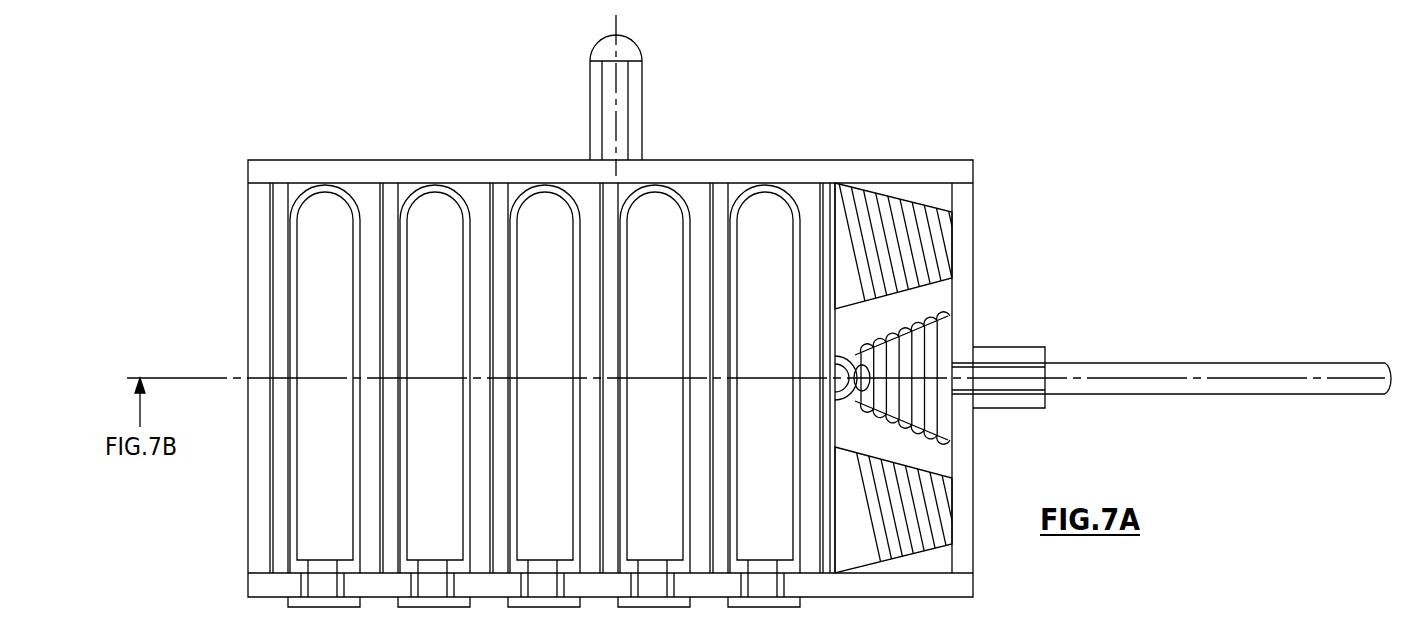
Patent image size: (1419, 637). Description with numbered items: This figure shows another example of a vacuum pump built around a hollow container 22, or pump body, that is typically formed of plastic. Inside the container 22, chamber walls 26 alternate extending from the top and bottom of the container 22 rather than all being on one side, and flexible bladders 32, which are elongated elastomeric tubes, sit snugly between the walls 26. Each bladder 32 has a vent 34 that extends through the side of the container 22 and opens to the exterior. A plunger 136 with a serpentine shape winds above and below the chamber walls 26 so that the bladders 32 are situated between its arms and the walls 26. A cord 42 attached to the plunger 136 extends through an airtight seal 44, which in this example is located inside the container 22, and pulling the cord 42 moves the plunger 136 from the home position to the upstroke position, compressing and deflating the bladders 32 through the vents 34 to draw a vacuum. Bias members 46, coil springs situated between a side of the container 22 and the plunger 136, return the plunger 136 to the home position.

The hollow container 22 is at (960, 597).
The chamber walls 26 is at (370, 198).
The flexible bladders 32 is at (302, 197).
The vent 34 is at (310, 587).
The cord 42 is at (1085, 362).
The airtight seal 44 is at (918, 323).
The bias member 46 is at (920, 203).
The plunger 136 is at (827, 203).